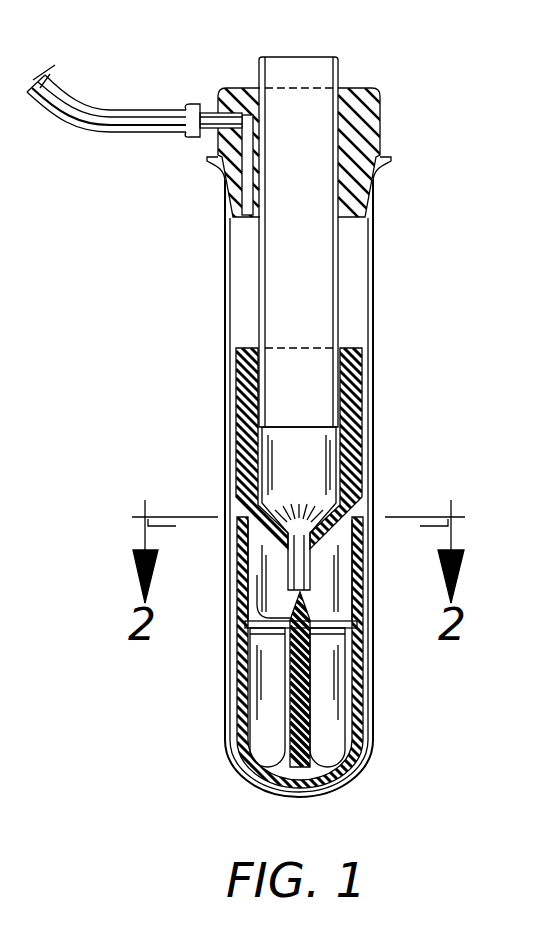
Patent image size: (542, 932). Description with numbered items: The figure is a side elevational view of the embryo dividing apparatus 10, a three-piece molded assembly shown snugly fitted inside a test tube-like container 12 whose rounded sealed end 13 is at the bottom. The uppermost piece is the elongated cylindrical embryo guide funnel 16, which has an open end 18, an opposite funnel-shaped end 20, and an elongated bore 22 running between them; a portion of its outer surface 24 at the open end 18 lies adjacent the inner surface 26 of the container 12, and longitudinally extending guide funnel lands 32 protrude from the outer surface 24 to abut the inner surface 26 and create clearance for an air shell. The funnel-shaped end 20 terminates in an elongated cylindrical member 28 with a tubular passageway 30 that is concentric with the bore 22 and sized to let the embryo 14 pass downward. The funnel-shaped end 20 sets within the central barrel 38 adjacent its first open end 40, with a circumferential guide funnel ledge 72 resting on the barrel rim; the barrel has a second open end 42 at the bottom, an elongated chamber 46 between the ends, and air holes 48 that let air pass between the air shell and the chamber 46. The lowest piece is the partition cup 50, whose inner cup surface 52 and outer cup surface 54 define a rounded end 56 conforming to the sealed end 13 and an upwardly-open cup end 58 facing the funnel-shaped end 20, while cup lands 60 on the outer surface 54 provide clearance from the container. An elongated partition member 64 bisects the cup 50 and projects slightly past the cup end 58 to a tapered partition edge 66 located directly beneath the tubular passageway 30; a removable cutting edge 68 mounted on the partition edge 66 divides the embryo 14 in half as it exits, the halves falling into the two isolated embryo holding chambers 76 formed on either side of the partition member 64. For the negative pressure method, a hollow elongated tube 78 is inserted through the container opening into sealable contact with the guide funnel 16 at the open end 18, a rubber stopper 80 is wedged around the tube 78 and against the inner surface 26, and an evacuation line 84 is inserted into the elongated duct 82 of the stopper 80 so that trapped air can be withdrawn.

The embryo dividing apparatus 10 is at (356, 792).
The container 12 is at (373, 256).
The rounded sealed end 13 is at (298, 798).
The embryo 14 is at (356, 603).
The embryo guide funnel 16 is at (352, 446).
The open end 18 is at (344, 362).
The funnel-shaped end 20 is at (262, 538).
The elongated bore 22 is at (284, 481).
The outer surface 24 is at (252, 360).
The inner surface 26 is at (368, 245).
The elongated cylindrical member 28 is at (269, 566).
The tubular passageway 30 is at (310, 578).
The guide funnel lands 32 is at (236, 350).
The central barrel 38 is at (240, 453).
The first open end 40 is at (234, 392).
The second open end 42 is at (368, 694).
The elongated chamber 46 is at (356, 596).
The air holes 48 is at (236, 517).
The partition cup 50 is at (364, 703).
The inner cup surface 52 is at (252, 698).
The outer cup surface 54 is at (248, 713).
The rounded end 56 is at (283, 796).
The cup end 58 is at (262, 599).
The cup lands 60 is at (232, 743).
The partition member 64 is at (309, 688).
The tapered partition edge 66 is at (290, 592).
The cutting edge 68 is at (304, 598).
The guide funnel ledge 72 is at (235, 420).
The embryo holding chambers 76 is at (238, 759).
The hollow elongated tube 78 is at (343, 65).
The rubber stopper 80 is at (372, 92).
The elongated duct 82 is at (238, 160).
The evacuation line 84 is at (160, 110).